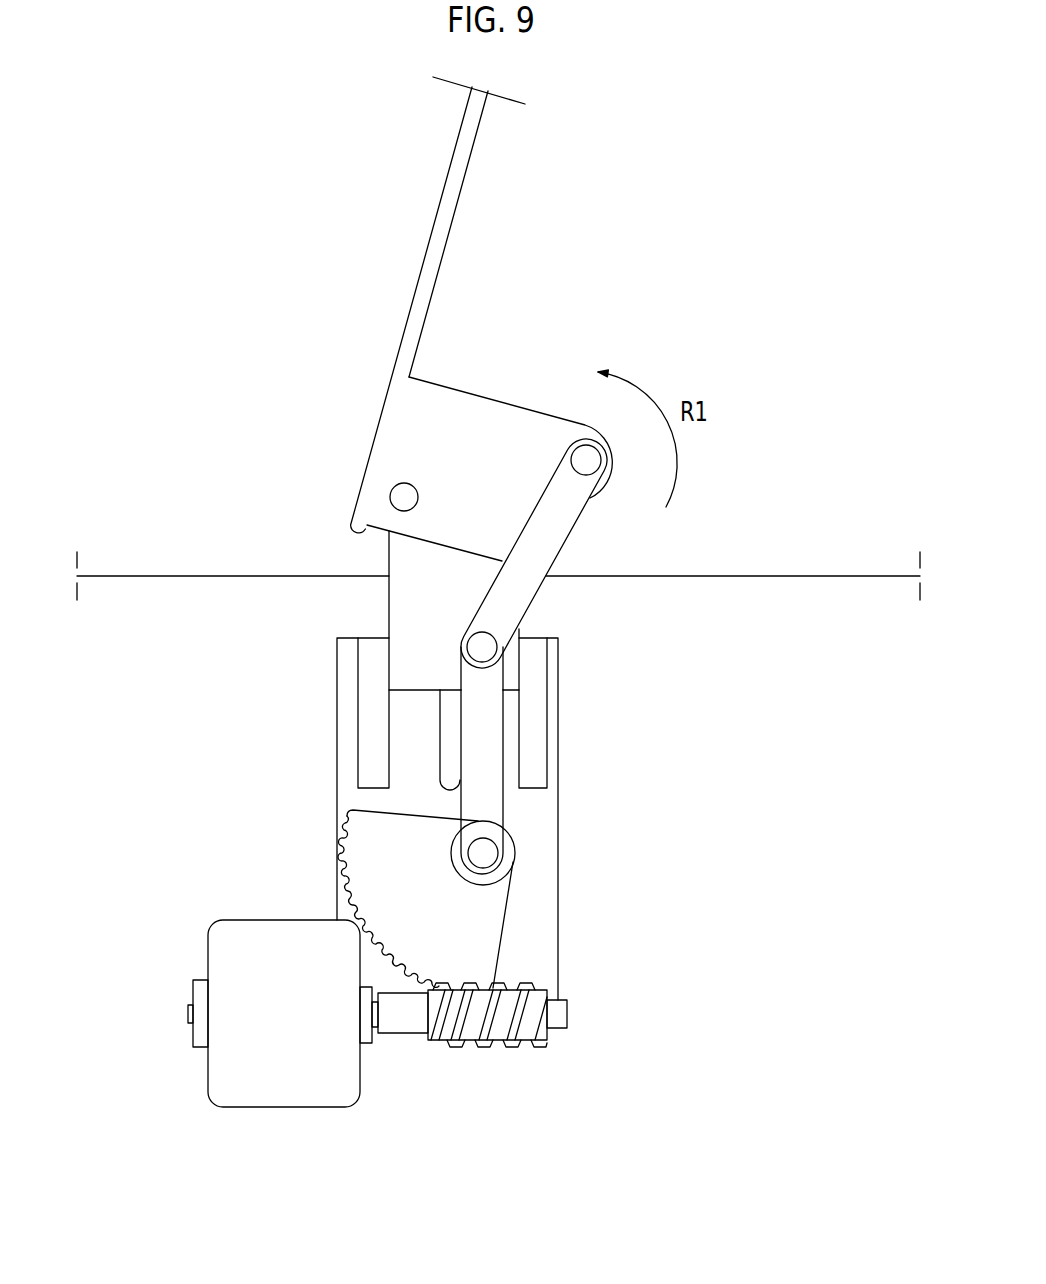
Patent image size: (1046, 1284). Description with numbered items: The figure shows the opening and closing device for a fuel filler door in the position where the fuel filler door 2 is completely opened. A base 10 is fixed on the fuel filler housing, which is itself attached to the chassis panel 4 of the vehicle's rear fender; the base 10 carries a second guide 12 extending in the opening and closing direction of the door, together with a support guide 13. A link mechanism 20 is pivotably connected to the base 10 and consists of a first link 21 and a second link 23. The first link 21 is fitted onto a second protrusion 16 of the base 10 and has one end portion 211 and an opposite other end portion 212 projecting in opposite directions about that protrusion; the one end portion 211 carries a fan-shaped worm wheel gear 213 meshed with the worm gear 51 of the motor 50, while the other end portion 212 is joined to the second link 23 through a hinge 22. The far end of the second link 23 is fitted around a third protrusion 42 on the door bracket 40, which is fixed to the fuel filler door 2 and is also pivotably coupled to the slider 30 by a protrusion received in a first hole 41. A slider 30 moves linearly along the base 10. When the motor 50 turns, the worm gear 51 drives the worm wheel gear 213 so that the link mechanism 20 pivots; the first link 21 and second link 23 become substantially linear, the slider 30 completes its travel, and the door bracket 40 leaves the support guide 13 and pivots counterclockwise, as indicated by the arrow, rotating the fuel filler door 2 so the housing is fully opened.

The fuel filler door 2 is at (430, 262).
The chassis panel 4 is at (153, 575).
The base 10 is at (452, 819).
The second guide 12 is at (373, 737).
The support guide 13 is at (538, 778).
The second protrusion 16 is at (484, 857).
The link mechanism 20 is at (482, 656).
The first link 21 is at (566, 760).
The hinge 22 is at (484, 648).
The second link 23 is at (512, 583).
The slider 30 is at (402, 672).
The door bracket 40 is at (445, 465).
The first hole 41 is at (404, 497).
The third protrusion 42 is at (586, 455).
The motor 50 is at (225, 1077).
The worm gear 51 is at (507, 1050).
The one end portion 211 is at (500, 967).
The other end portion 212 is at (490, 677).
The worm wheel gear 213 is at (395, 965).